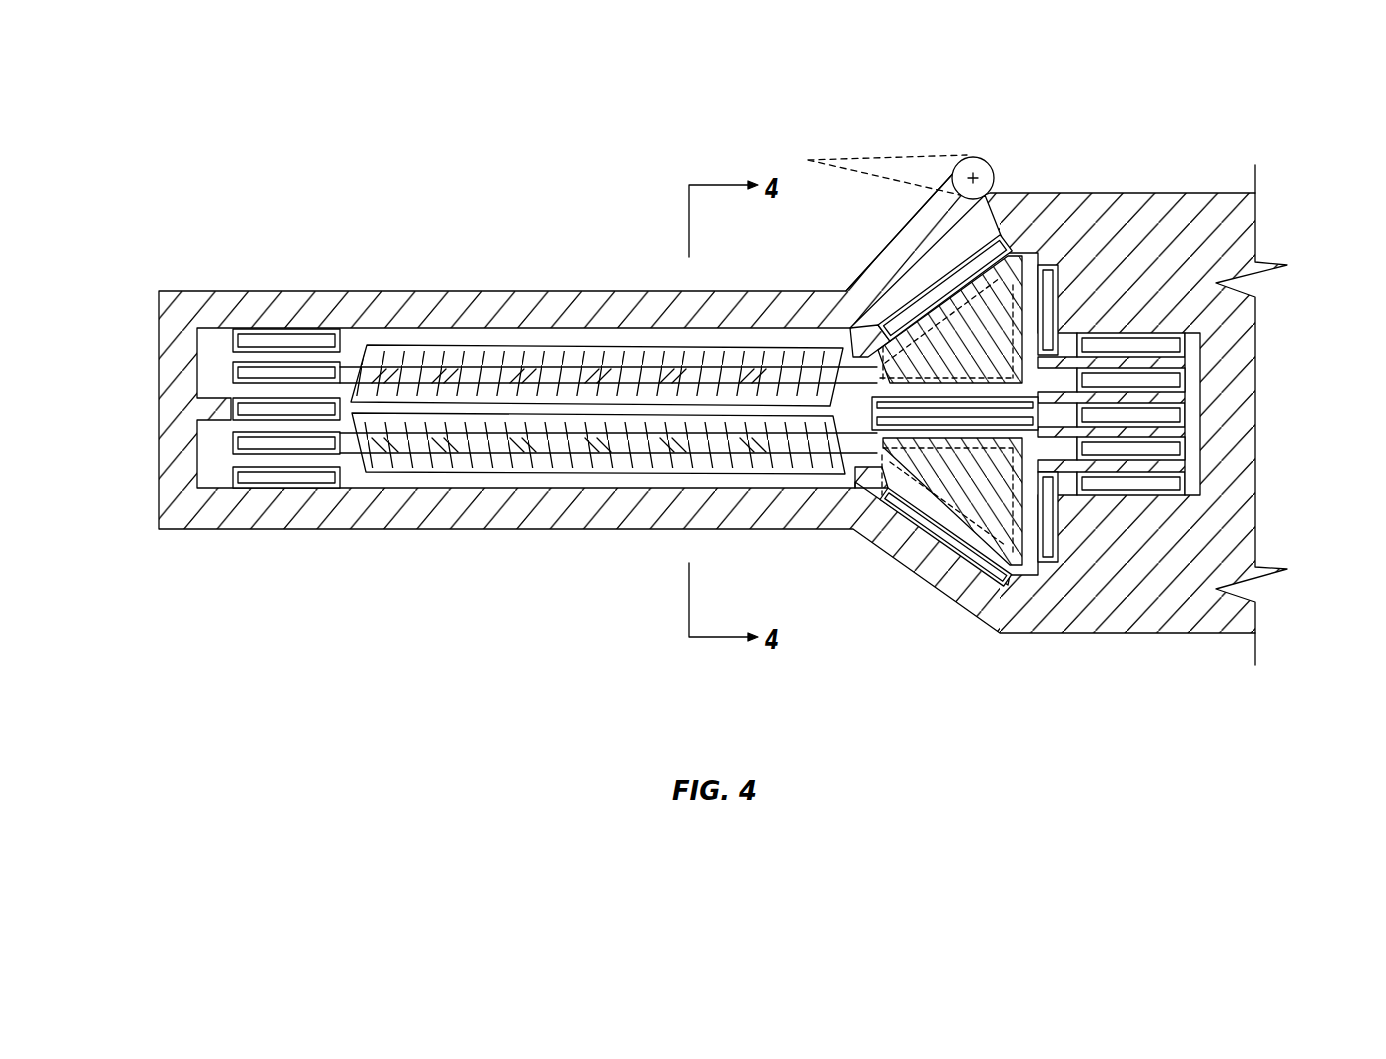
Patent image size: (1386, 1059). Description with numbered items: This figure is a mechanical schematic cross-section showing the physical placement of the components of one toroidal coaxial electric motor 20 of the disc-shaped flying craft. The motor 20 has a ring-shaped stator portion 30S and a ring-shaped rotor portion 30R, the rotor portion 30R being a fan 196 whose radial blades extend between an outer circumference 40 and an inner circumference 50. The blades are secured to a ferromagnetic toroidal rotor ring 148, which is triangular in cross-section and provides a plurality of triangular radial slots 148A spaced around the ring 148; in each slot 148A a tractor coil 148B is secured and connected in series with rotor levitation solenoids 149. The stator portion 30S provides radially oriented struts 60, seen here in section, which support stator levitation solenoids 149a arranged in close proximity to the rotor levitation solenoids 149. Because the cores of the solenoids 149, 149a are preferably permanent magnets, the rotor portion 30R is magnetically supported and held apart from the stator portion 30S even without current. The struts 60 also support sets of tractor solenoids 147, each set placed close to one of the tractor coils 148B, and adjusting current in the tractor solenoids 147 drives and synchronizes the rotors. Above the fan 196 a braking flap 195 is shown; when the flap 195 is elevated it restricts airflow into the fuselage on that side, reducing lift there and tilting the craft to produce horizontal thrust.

The coaxial electric motor 20 is at (1012, 82).
The outer circumference 40 is at (357, 258).
The inner circumference 50 is at (881, 570).
The strut 60 is at (602, 517).
The tractor solenoid 147 is at (872, 362).
The ferromagnetic toroidal rotor ring 148 is at (977, 335).
The triangular radial slot 148A is at (1013, 518).
The tractor coil 148B is at (1007, 580).
The rotor levitation solenoid 149 is at (327, 368).
The stator levitation solenoid 149a is at (287, 338).
The braking flap 195 is at (917, 227).
The fan 196 is at (633, 357).
The rotor portion 30R is at (898, 505).
The stator portion 30S is at (985, 570).